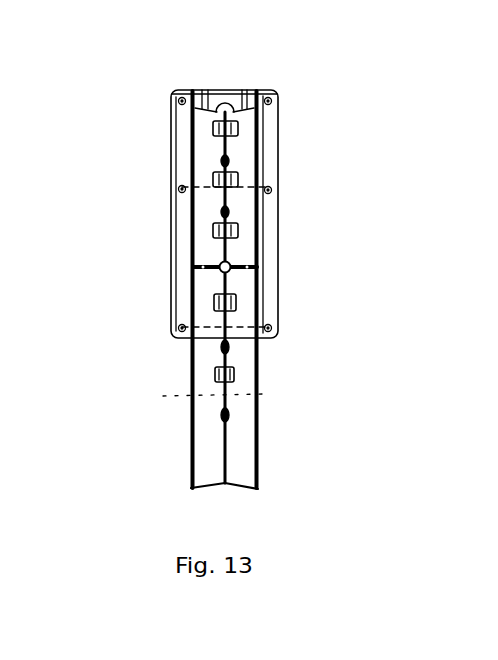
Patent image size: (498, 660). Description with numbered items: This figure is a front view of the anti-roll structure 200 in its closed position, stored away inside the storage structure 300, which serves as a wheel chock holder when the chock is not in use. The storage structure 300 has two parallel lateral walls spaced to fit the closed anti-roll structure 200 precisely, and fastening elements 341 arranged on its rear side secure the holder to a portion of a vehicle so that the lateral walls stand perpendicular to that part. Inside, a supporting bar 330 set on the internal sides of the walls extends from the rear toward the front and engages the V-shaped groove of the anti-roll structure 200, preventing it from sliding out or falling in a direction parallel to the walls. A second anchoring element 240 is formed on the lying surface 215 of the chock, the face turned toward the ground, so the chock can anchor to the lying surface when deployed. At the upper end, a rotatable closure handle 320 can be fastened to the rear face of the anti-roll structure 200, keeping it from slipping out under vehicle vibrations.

The storage structure 300 is at (139, 266).
The fastening elements 341 is at (182, 101).
The second anchoring element 240 is at (268, 191).
The lying surface 215 is at (243, 430).
The closure handle 320 is at (243, 90).
The anti-roll structure 200 is at (246, 157).
The supporting bar 330 is at (240, 277).